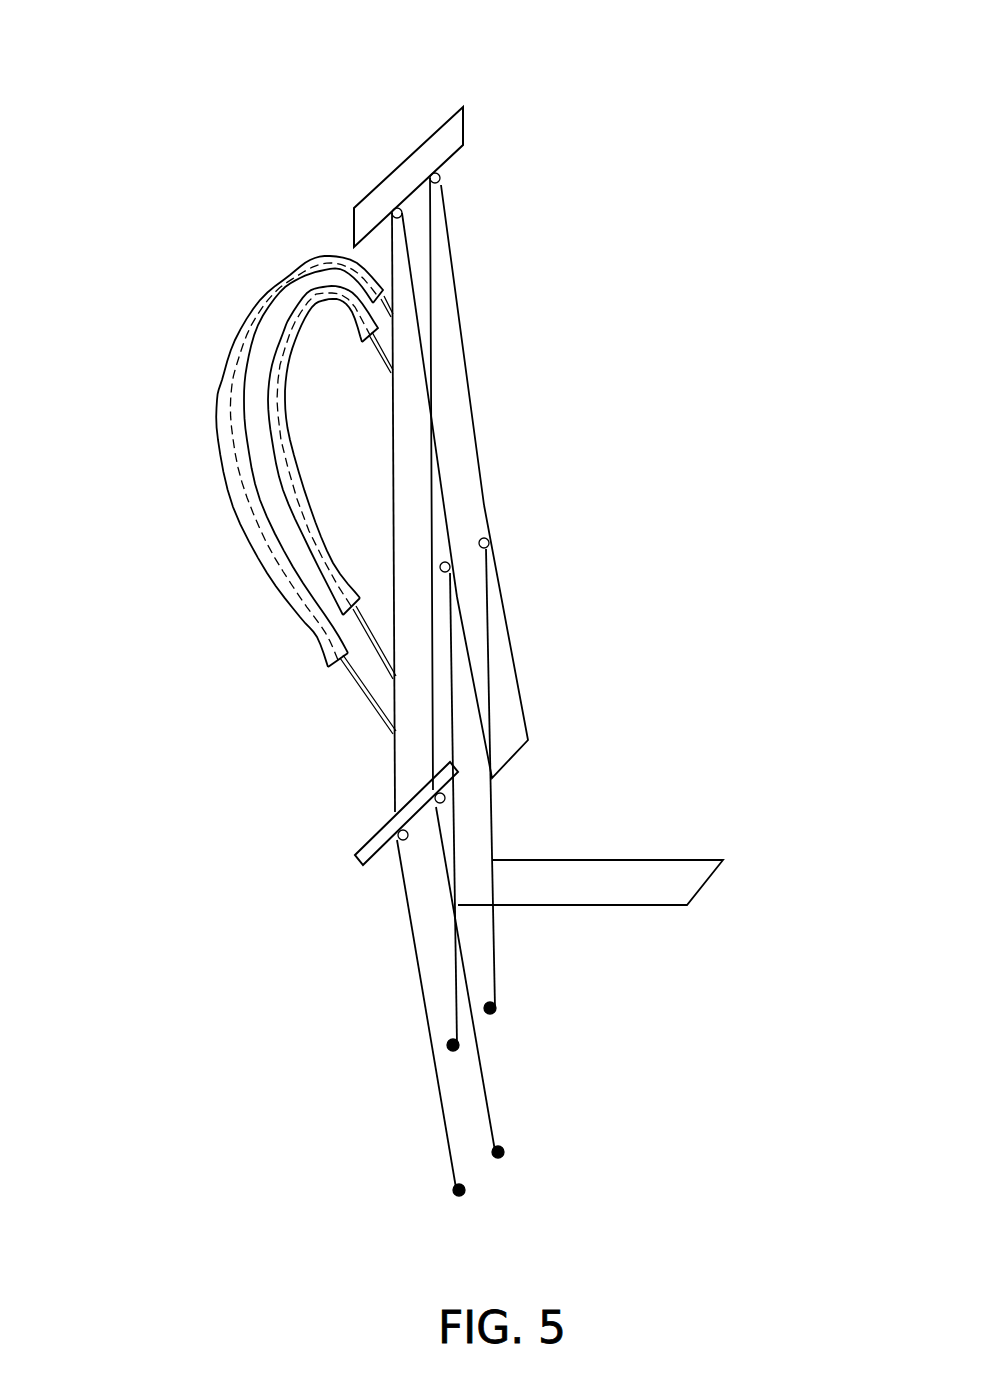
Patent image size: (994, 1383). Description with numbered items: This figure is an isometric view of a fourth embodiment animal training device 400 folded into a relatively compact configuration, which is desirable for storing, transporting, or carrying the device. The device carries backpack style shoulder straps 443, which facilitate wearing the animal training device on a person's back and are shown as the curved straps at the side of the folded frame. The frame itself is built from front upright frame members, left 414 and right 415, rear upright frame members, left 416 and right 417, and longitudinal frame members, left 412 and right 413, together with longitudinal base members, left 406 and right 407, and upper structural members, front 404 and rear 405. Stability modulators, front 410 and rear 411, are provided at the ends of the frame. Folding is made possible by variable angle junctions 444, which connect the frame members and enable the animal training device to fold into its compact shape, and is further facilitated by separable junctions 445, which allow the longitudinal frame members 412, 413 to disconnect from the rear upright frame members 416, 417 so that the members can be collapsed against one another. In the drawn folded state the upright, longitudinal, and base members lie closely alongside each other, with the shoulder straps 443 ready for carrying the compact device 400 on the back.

The animal training device 400 is at (441, 76).
The front upper structural member 404 is at (512, 650).
The rear upper structural member 405 is at (703, 887).
The left longitudinal base member 406 is at (396, 532).
The right longitudinal base member 407 is at (347, 605).
The front stability modulator 410 is at (457, 130).
The rear stability modulator 411 is at (355, 855).
The left longitudinal frame member 412 is at (497, 955).
The right longitudinal frame member 413 is at (458, 850).
The left front upright frame member 414 is at (468, 351).
The right front upright frame member 415 is at (410, 250).
The left rear upright frame member 416 is at (477, 1068).
The right rear upright frame member 417 is at (410, 940).
The backpack style shoulder straps 443 is at (275, 423).
The variable angle junctions 444 is at (447, 798).
The separable junctions 445 is at (490, 1008).